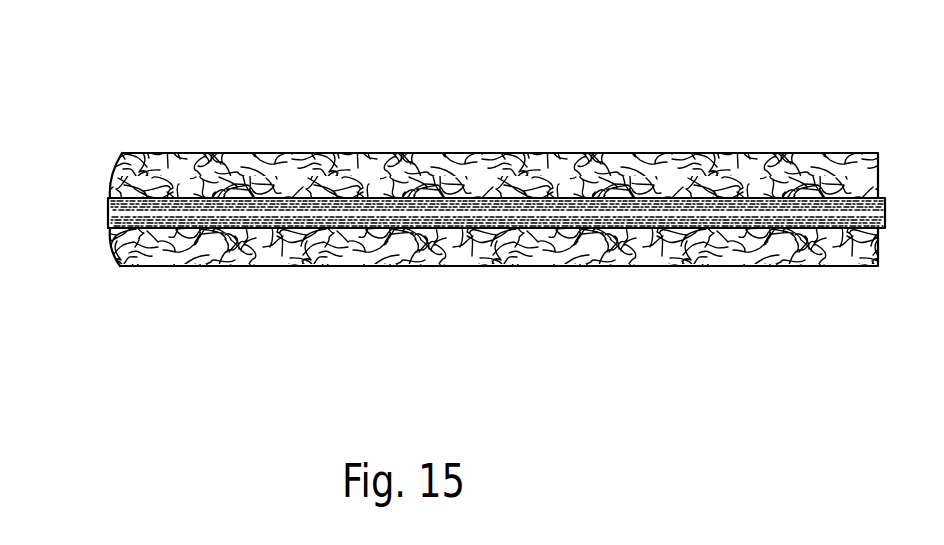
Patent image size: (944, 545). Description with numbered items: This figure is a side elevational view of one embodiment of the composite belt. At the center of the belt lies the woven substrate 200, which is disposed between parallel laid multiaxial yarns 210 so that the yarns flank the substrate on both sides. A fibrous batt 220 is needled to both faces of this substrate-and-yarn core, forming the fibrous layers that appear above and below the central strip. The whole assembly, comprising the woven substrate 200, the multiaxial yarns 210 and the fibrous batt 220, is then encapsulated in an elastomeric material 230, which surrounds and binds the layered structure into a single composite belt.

The woven substrate 200 is at (110, 228).
The parallel laid multiaxial yarns 210 is at (113, 200).
The fibrous batt 220 is at (683, 172).
The elastomeric material 230 is at (590, 151).